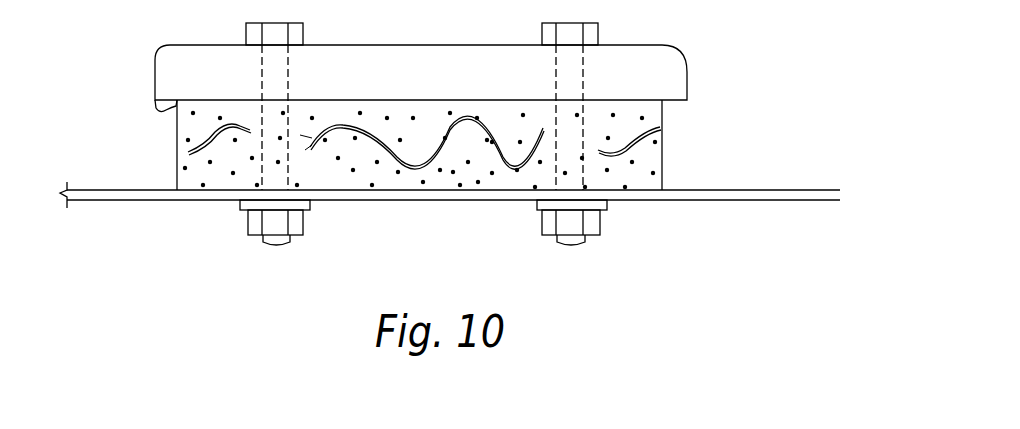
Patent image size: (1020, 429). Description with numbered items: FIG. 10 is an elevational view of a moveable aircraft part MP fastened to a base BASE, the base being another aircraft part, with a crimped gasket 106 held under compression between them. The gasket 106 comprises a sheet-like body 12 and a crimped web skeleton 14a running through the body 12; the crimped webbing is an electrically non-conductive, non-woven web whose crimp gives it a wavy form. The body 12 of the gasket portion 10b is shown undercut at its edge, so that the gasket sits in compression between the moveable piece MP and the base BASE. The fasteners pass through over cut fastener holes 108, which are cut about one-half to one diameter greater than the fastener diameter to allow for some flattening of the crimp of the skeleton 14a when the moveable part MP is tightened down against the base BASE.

The mold body portion 10b is at (160, 115).
The crimped gasket 106 is at (687, 121).
The over cut fastener holes 108 is at (310, 150).
The body 12 is at (455, 172).
The wave-shaped insert 14a is at (343, 123).
The moveable aircraft part MP is at (393, 55).
The base BASE is at (735, 190).